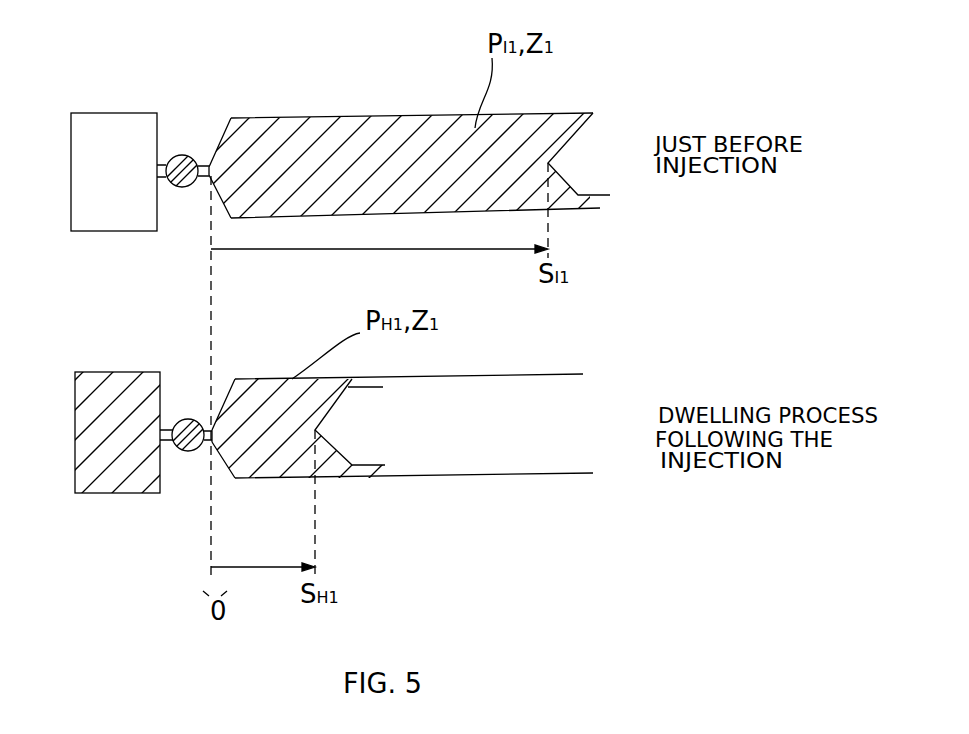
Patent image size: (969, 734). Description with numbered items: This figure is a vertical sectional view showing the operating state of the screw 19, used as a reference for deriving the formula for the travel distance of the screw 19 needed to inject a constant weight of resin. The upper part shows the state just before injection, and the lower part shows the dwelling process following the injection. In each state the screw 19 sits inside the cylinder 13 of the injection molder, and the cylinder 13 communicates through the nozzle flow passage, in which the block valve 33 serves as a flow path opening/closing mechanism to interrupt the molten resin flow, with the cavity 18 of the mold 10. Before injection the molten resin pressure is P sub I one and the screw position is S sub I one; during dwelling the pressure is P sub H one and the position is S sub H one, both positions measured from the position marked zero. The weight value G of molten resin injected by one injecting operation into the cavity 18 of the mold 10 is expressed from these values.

The mold 10 is at (132, 265).
The cavity 18 is at (132, 304).
The weight value of the molten resin G is at (100, 458).
The block valve 33 is at (181, 153).
The cylinder 13 is at (402, 116).
The screw 19 is at (594, 140).